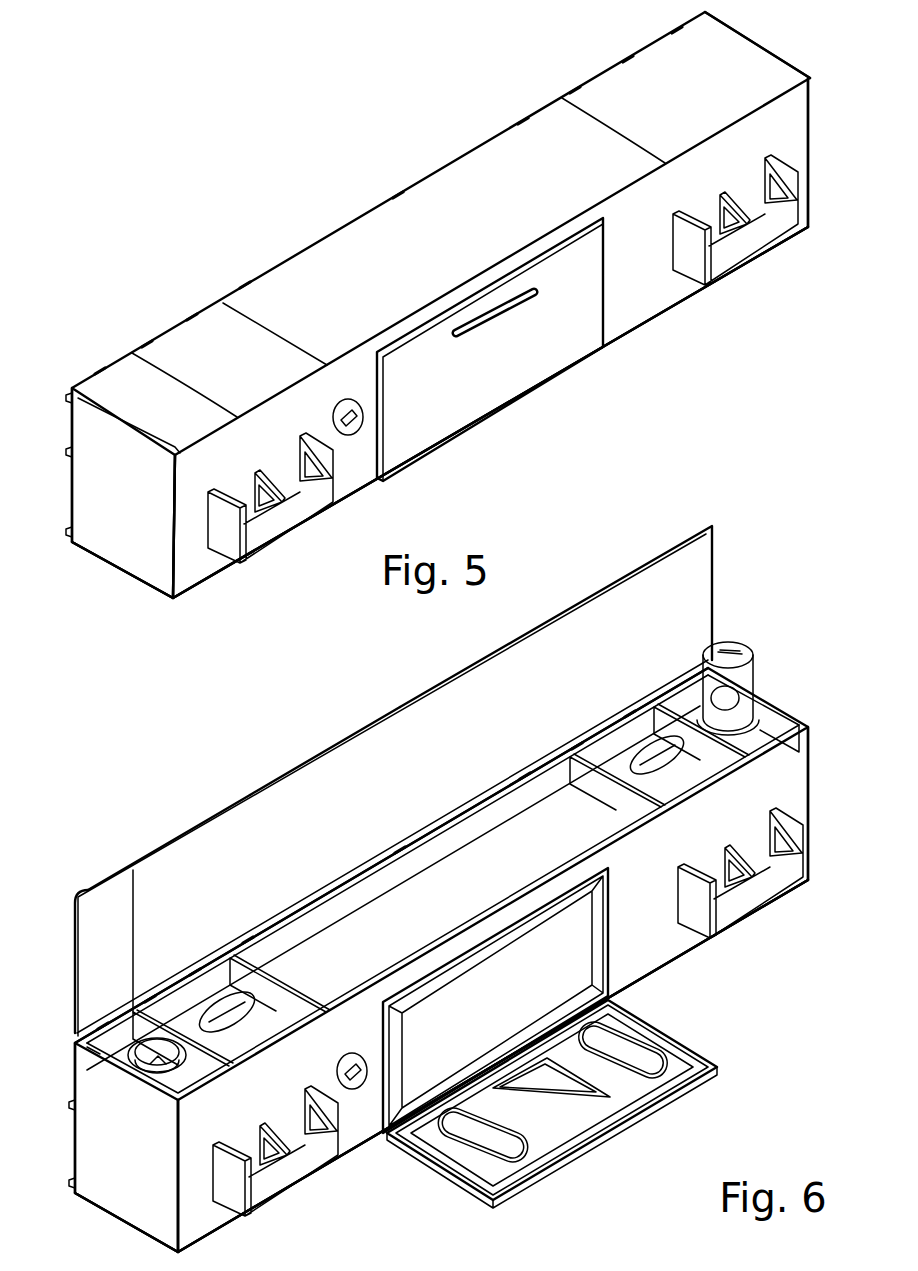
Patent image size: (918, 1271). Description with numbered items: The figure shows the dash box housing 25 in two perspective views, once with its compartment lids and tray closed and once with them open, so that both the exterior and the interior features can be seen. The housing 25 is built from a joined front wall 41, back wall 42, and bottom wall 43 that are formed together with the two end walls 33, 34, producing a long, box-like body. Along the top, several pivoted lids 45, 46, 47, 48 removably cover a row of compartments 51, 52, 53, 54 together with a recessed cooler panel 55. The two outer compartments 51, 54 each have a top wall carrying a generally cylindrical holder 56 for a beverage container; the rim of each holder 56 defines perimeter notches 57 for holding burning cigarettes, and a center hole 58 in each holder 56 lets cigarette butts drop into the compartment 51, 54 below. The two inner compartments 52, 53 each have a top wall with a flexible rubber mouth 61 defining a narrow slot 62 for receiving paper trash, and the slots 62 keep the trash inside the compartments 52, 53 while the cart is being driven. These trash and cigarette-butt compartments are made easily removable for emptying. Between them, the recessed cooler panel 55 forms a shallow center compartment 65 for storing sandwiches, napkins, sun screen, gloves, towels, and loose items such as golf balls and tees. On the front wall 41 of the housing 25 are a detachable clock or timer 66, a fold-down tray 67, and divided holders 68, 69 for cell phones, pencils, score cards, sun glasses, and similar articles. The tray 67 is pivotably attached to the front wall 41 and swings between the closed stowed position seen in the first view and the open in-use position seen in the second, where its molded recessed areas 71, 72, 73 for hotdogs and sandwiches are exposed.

In FIG. 5, the housing 25 is at (248, 243).
In FIG. 6, the housing 25 is at (776, 640).
In FIG. 5, the end wall 33 is at (110, 525).
In FIG. 6, the end wall 33 is at (93, 1122).
In FIG. 5, the end wall 34 is at (806, 155).
In FIG. 6, the end wall 34 is at (808, 843).
In FIG. 5, the front wall 41 is at (195, 567).
In FIG. 6, the front wall 41 is at (795, 762).
In FIG. 5, the back wall 42 is at (68, 452).
In FIG. 6, the back wall 42 is at (70, 1152).
In FIG. 5, the bottom wall 43 is at (145, 585).
In FIG. 6, the bottom wall 43 is at (115, 1215).
In FIG. 5, the pivoted lid 45 is at (112, 395).
In FIG. 6, the pivoted lid 45 is at (70, 996).
In FIG. 5, the pivoted lid 46 is at (195, 343).
In FIG. 6, the pivoted lid 46 is at (218, 810).
In FIG. 5, the pivoted lid 47 is at (360, 245).
In FIG. 6, the pivoted lid 47 is at (385, 712).
In FIG. 5, the pivoted lid 48 is at (633, 100).
In FIG. 6, the pivoted lid 48 is at (683, 533).
In FIG. 6, the compartment 51 is at (96, 992).
In FIG. 6, the compartment 52 is at (183, 947).
In FIG. 6, the compartment 53 is at (609, 684).
In FIG. 6, the compartment 54 is at (683, 628).
In FIG. 6, the recessed cooler panel 55 is at (372, 930).
In FIG. 6, the cylindrical holder 56 is at (763, 717).
In FIG. 6, the perimeter notches 57 is at (78, 1036).
In FIG. 6, the center hole 58 is at (136, 1068).
In FIG. 6, the flexible rubber mouth 61 is at (240, 1010).
In FIG. 6, the narrow slot 62 is at (262, 1013).
In FIG. 6, the center compartment 65 is at (436, 885).
In FIG. 6, the clock or timer 66 is at (362, 1058).
In FIG. 6, the fold-down tray 67 is at (680, 1040).
In FIG. 6, the divided holder 68 is at (293, 1177).
In FIG. 6, the divided holder 69 is at (752, 905).
In FIG. 6, the molded recessed area 71 is at (472, 1130).
In FIG. 6, the molded recessed area 72 is at (552, 1090).
In FIG. 6, the molded recessed area 73 is at (637, 1070).